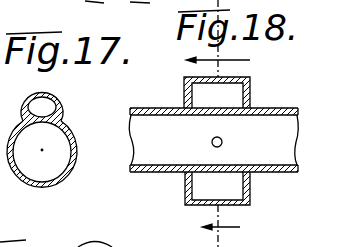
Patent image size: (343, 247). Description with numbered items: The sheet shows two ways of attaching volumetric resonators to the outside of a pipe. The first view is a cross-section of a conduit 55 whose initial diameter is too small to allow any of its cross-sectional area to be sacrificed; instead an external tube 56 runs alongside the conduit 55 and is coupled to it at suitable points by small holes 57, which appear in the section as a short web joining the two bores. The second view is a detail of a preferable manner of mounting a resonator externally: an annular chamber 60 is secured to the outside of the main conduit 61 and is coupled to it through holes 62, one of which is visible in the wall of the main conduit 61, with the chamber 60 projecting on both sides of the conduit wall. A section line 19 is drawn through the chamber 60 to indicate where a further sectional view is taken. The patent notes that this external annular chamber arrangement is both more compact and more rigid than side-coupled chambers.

In FIG. 18, the section line 19- 19 is at (231, 123).
In FIG. 17, the conduit 55 is at (52, 188).
In FIG. 17, the external tube 56 is at (54, 98).
In FIG. 17, the small holes 57 is at (47, 122).
In FIG. 18, the annular chamber 60 is at (249, 93).
In FIG. 18, the main conduit 61 is at (165, 172).
In FIG. 18, the holes 62 is at (222, 142).